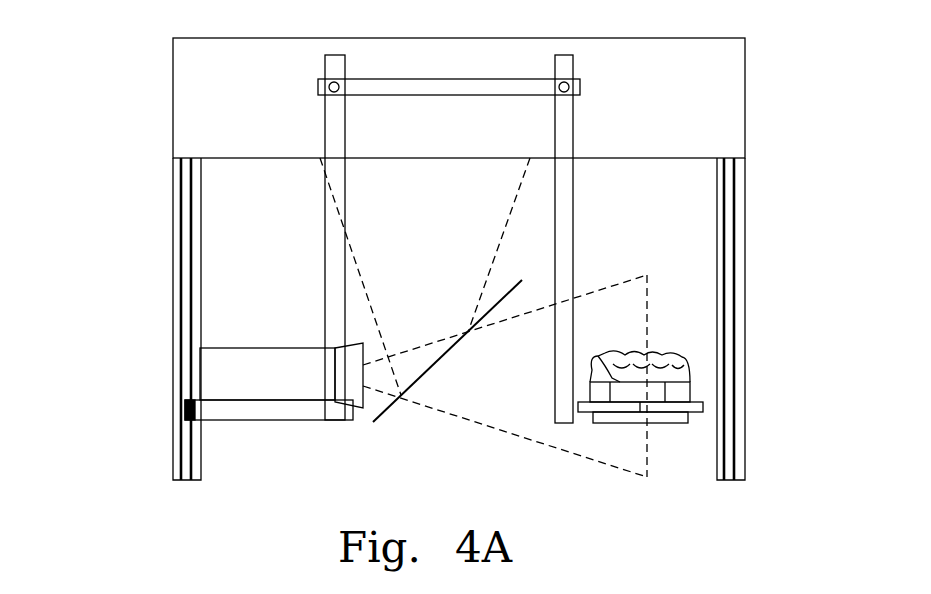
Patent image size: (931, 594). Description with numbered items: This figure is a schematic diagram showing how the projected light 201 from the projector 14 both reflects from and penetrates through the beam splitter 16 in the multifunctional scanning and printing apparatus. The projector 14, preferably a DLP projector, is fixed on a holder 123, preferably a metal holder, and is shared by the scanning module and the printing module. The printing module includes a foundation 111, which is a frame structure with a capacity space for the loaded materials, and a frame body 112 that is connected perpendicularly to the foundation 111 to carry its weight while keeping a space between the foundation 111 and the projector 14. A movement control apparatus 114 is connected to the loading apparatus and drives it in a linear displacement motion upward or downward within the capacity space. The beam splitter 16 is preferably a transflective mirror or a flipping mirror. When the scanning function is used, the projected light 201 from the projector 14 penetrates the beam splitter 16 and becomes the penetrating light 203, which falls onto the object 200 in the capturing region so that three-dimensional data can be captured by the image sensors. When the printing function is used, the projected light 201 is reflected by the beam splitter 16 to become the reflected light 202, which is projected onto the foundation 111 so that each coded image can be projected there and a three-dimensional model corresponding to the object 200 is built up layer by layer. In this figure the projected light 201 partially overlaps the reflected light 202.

The foundation 111 is at (172, 107).
The frame body 112 is at (190, 292).
The movement control apparatus 114 is at (565, 190).
The projector 14 is at (268, 360).
The beam splitter 16 is at (493, 302).
The holder 123 is at (245, 412).
The object 200 is at (660, 352).
The projected light 201 is at (378, 370).
The reflected light 202 is at (385, 228).
The penetrating light 203 is at (508, 400).